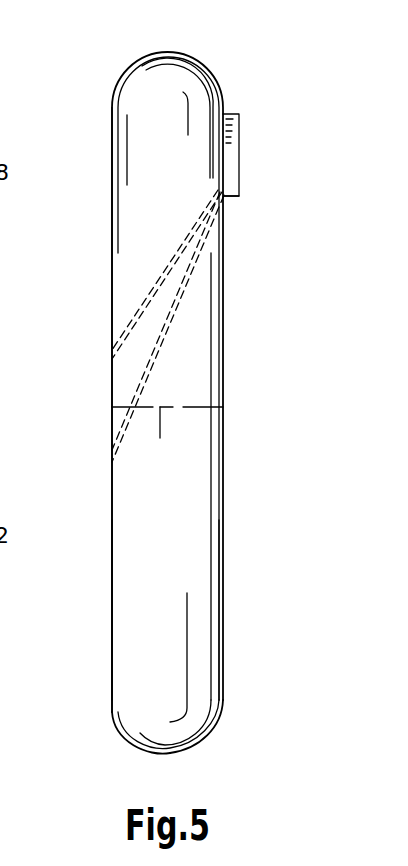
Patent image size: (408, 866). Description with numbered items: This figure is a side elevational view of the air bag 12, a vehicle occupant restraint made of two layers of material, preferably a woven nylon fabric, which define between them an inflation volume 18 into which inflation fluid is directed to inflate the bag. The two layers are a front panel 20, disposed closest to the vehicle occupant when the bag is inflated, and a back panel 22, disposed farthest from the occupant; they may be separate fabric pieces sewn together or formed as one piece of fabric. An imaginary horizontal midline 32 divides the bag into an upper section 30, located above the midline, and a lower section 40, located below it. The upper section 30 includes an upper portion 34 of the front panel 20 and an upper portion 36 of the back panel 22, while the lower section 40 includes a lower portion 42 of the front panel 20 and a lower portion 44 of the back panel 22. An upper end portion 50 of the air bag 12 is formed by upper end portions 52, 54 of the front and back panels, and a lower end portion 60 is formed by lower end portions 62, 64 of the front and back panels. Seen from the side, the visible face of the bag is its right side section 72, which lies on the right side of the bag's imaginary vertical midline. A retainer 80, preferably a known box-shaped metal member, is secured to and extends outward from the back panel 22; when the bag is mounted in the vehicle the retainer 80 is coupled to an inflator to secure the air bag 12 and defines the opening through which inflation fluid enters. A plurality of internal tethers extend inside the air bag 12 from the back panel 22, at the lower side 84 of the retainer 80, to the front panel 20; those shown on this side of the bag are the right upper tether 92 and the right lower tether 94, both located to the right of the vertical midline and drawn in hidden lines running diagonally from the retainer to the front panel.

The air bag 12 is at (273, 670).
The inflation volume 18 is at (192, 462).
The front panel 20 is at (98, 385).
The back panel 22 is at (238, 385).
The upper section 30 is at (268, 248).
The imaginary horizontal midline 32 is at (161, 446).
The upper portion of the front panel 34 is at (112, 228).
The upper portion of the back panel 36 is at (223, 295).
The lower section 40 is at (269, 569).
The lower portion of the front panel 42 is at (112, 588).
The lower portion of the back panel 44 is at (223, 633).
The upper end portion 50 is at (152, 40).
The upper end portion of the front panel 52 is at (112, 100).
The upper end portion of the back panel 54 is at (218, 82).
The lower end portion 60 is at (207, 757).
The lower end portion of the front panel 62 is at (112, 713).
The lower end portion of the back panel 64 is at (221, 724).
The right side section 72 is at (177, 568).
The retainer 80 is at (235, 146).
The lower side of the retainer 84 is at (236, 197).
The right upper tether 92 is at (157, 285).
The right lower tether 94 is at (163, 350).